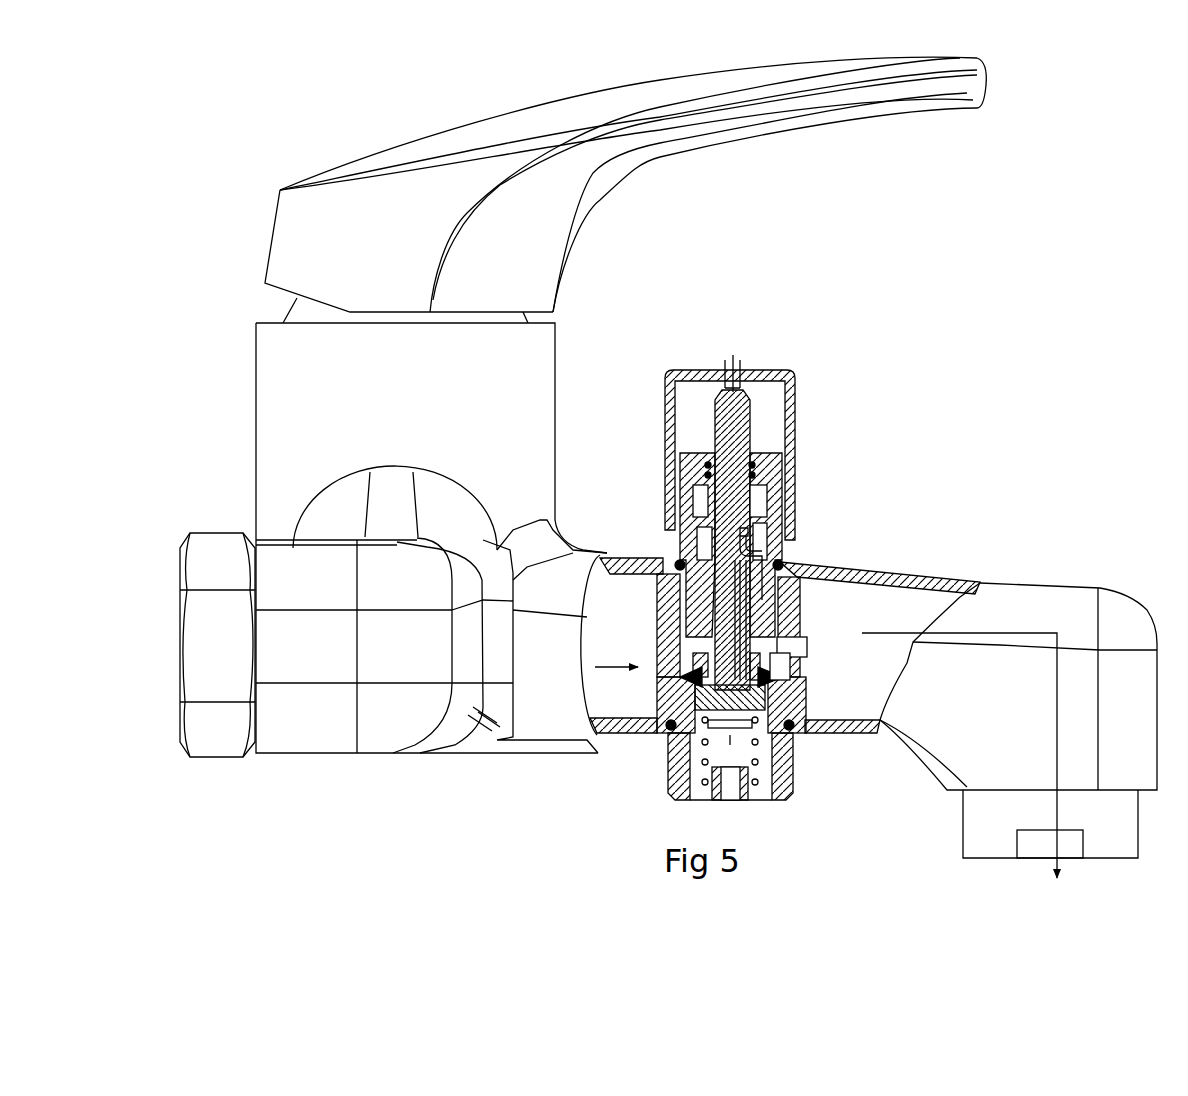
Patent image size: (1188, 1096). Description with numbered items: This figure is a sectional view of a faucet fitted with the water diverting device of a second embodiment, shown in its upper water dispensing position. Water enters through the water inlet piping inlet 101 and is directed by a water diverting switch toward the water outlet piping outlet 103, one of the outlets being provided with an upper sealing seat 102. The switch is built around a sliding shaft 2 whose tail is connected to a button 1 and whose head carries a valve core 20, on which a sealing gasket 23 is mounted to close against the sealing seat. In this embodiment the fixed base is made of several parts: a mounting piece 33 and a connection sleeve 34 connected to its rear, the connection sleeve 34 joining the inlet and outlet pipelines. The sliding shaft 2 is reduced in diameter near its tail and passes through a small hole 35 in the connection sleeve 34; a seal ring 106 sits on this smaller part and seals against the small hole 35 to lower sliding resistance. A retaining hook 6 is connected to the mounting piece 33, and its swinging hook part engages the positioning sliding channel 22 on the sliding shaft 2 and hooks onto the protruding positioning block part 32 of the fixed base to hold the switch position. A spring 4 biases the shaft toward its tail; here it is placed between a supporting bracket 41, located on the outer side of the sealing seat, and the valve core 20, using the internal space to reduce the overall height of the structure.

The button 1 is at (792, 390).
The sliding shaft 2 is at (723, 503).
The spring 4 is at (753, 740).
The retaining hook 6 is at (760, 567).
The valve core 20 is at (783, 687).
The positioning sliding channel 22 is at (785, 638).
The sealing gasket 23 is at (668, 733).
The protruding positioning block part 32 is at (782, 573).
The mounting piece 33 is at (683, 563).
The connection sleeve 34 is at (773, 517).
The small hole 35 is at (757, 477).
The supporting bracket 41 is at (700, 795).
The water inlet piping inlet 101 is at (657, 665).
The upper sealing seat 102 is at (653, 723).
The water outlet piping outlet 103 is at (798, 610).
The seal ring 106 is at (765, 460).